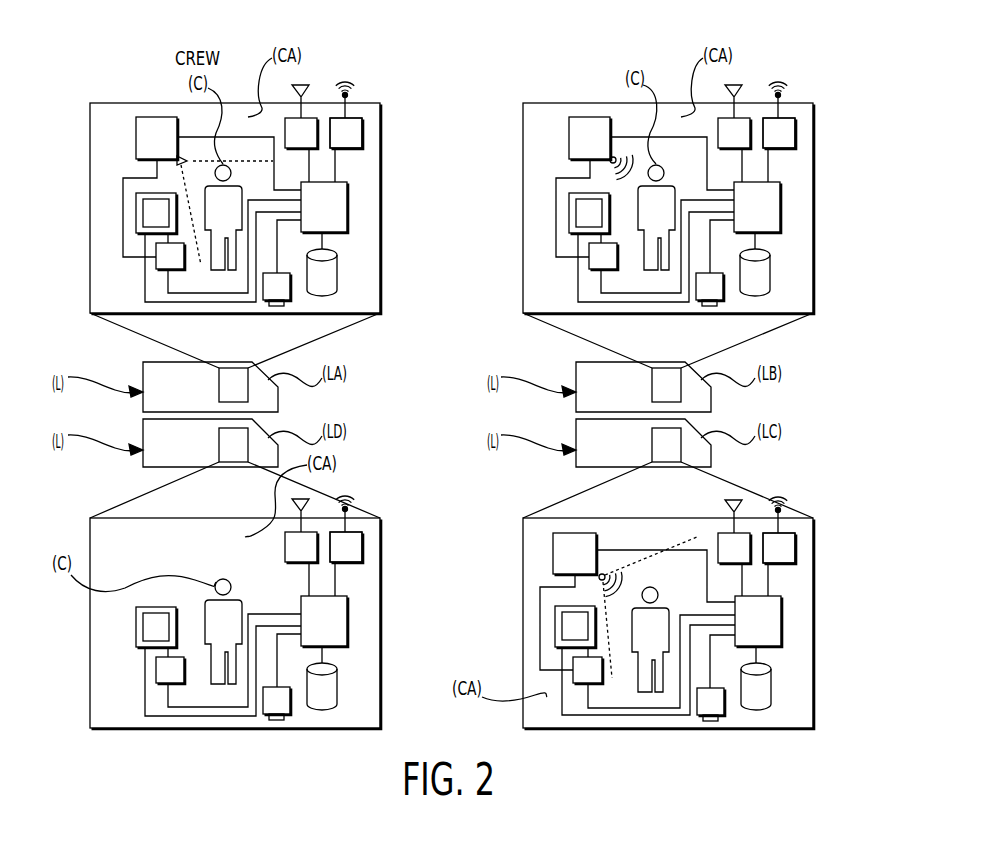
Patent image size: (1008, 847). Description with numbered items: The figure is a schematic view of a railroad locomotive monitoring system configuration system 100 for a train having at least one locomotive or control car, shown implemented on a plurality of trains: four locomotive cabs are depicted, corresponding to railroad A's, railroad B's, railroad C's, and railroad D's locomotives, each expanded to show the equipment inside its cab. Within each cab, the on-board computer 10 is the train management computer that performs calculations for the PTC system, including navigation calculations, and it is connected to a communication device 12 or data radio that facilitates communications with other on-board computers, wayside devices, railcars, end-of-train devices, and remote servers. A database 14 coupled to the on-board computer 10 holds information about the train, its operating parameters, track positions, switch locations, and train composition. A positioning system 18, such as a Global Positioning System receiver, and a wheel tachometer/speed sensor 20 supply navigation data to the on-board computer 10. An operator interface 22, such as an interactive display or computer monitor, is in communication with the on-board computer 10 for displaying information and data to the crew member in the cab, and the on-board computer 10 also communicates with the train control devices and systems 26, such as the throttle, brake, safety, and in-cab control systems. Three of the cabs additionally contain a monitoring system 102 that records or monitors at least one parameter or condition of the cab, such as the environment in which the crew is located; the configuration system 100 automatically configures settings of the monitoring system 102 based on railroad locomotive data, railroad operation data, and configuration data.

The railroad locomotive monitoring system configuration system 100 is at (838, 70).
The monitoring system 102 is at (553, 540).
The on-board computer 10 is at (347, 200).
The communication device 12 is at (362, 131).
The database 14 is at (337, 260).
The positioning system 18 is at (309, 117).
The wheel tachometer/speed sensor 20 is at (290, 293).
The operator interface 22 is at (136, 215).
The train control devices and systems 26 is at (156, 252).